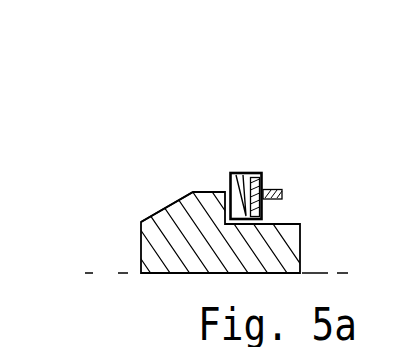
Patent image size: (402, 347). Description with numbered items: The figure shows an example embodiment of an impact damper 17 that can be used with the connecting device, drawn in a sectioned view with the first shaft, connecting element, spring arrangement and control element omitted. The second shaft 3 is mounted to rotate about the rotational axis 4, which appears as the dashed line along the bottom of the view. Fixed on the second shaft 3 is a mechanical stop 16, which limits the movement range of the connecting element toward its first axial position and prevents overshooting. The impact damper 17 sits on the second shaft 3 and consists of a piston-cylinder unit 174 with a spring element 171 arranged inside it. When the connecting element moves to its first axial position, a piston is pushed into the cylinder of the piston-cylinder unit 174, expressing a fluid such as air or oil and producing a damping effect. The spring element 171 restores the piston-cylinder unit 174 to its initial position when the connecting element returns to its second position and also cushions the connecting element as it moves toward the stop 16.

The second shaft 3 is at (175, 232).
The rotational axis 4 is at (107, 272).
The mechanical stop 16 is at (173, 188).
The impact damper 17 is at (203, 147).
The spring element 171 is at (244, 172).
The piston-cylinder unit 174 is at (271, 177).